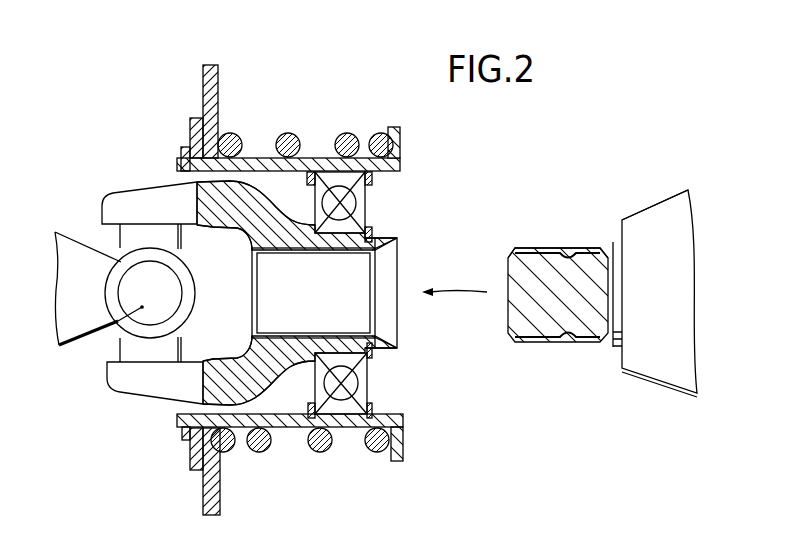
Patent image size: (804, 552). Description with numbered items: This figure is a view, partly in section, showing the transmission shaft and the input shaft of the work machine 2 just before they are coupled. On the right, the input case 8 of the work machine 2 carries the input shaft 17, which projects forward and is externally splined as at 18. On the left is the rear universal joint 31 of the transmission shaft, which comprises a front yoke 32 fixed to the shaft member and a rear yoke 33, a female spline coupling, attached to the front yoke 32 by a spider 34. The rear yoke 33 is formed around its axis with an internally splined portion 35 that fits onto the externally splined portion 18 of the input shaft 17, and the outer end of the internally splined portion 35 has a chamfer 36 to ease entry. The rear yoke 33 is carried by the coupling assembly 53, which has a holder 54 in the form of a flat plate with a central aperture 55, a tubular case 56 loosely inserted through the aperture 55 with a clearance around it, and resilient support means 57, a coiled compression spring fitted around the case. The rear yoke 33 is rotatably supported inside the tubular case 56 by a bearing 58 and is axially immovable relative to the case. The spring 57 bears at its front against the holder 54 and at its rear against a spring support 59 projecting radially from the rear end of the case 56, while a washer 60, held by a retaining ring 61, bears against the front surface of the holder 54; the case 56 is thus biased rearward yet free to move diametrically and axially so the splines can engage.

The work machine 2 is at (657, 178).
The input case 8 is at (667, 355).
The input shaft 17 is at (587, 323).
The externally splined portion 18 is at (545, 248).
The rear universal joint 31 is at (107, 186).
The front yoke 32 is at (70, 314).
The rear yoke 33 is at (254, 349).
The spider 34 is at (112, 330).
The internally splined portion 35 is at (332, 255).
The chamfer 36 is at (395, 243).
The coupling assembly 53 is at (306, 92).
The holder 54 is at (218, 96).
The aperture 55 is at (221, 149).
The tubular case 56 is at (345, 422).
The resilient support means 57 is at (299, 143).
The bearing 58 is at (370, 203).
The spring support 59 is at (403, 440).
The washer 60 is at (197, 470).
The retaining ring 61 is at (182, 436).